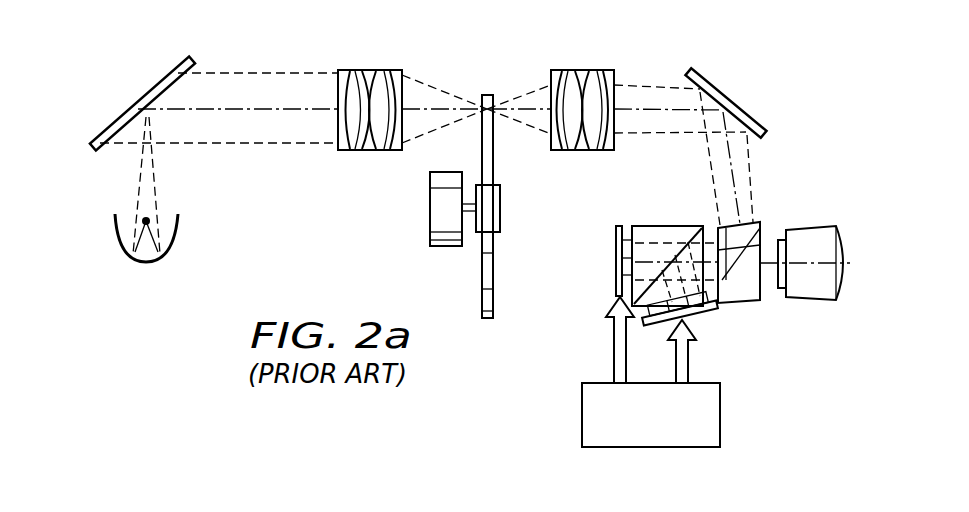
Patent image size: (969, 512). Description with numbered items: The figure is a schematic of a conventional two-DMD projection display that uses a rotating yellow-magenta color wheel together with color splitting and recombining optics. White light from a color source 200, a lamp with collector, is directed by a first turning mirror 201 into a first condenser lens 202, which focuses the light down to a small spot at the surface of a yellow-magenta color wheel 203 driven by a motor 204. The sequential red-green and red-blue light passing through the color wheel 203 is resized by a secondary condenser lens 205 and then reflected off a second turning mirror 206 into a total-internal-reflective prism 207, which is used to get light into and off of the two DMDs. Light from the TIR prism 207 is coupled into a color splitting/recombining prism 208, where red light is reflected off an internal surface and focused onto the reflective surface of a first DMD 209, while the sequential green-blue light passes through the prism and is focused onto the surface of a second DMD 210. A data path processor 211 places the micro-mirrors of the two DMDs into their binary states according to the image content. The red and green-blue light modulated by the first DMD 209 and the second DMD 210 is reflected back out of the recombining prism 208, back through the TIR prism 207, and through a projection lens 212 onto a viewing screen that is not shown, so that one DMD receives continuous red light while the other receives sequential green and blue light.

The color source 200 is at (146, 262).
The first turning mirror 201 is at (154, 85).
The first condenser lens 202 is at (365, 69).
The yellow-magenta color wheel 203 is at (495, 272).
The motor 204 is at (428, 211).
The secondary condenser lens 205 is at (586, 69).
The second turning mirror 206 is at (750, 84).
The total-internal-reflective (TIR) prism 207 is at (752, 304).
The color splitting/recombining prism 208 is at (668, 226).
The first DMD 209 is at (706, 322).
The second DMD 210 is at (616, 230).
The data path processor 211 is at (722, 416).
The projection lens 212 is at (809, 228).